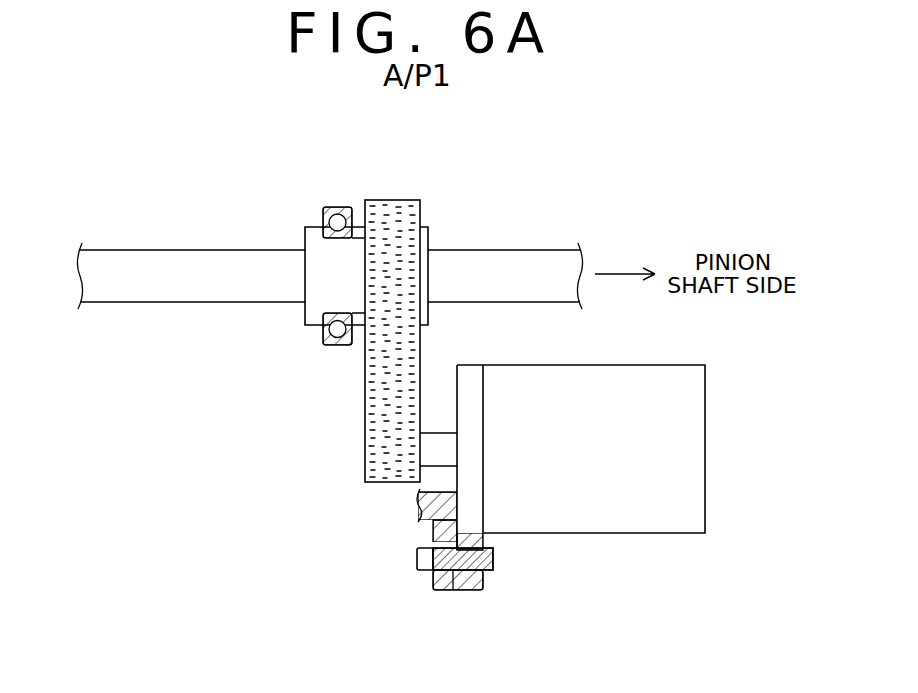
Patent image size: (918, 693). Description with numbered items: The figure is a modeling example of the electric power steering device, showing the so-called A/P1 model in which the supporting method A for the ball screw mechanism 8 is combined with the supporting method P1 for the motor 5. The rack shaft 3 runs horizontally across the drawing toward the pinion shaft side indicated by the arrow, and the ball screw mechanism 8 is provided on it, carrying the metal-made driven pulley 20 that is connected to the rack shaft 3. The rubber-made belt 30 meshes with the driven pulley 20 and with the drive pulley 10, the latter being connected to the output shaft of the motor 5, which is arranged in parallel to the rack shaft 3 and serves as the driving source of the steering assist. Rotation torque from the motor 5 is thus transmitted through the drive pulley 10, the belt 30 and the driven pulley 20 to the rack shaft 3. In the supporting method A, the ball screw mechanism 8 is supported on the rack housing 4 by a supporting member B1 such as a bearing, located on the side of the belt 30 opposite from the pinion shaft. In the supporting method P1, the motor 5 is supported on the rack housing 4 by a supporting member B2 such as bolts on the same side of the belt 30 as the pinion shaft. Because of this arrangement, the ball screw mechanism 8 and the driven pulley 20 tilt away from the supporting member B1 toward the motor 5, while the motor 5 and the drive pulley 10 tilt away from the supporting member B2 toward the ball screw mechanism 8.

The rack shaft 3 is at (137, 265).
The ball screw mechanism 8 is at (283, 208).
The supporting member B1 is at (338, 221).
The driven pulley 20 is at (360, 250).
The belt 30 is at (389, 200).
The drive pulley 10 is at (430, 428).
The motor 5 is at (673, 533).
The rack housing 4 is at (460, 505).
The supporting member B2 is at (448, 590).